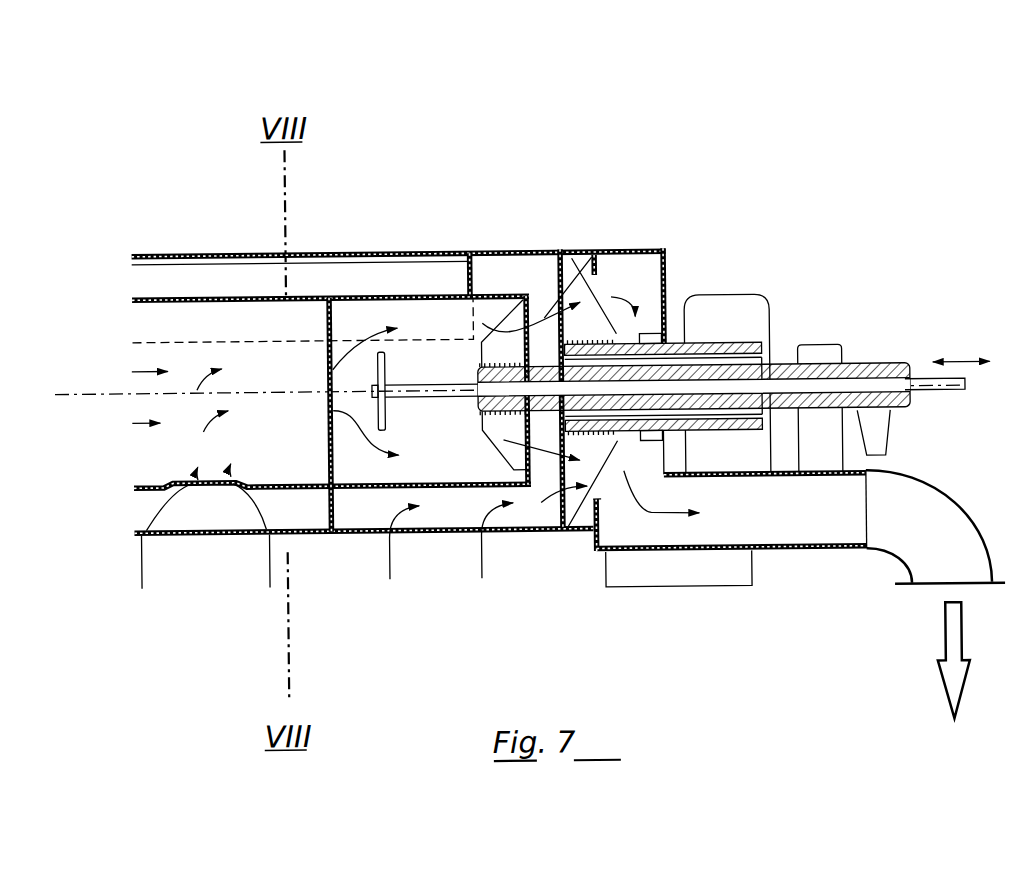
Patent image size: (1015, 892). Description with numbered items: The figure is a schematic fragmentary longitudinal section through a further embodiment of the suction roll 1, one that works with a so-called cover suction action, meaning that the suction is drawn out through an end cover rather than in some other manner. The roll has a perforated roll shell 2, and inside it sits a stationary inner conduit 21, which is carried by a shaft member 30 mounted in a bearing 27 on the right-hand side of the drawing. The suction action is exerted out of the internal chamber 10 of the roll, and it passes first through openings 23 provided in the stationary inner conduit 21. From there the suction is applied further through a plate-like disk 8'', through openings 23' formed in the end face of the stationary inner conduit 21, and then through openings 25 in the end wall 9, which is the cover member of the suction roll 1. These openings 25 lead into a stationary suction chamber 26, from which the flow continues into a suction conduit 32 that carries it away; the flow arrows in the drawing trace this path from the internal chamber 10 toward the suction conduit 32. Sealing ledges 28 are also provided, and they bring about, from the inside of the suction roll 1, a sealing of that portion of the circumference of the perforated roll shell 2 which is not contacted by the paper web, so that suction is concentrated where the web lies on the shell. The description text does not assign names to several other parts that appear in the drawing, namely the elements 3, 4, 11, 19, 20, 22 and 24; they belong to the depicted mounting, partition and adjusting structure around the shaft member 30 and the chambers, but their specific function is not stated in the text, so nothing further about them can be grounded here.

The suction roll 1 is at (625, 132).
The perforated roll shell 2 is at (496, 249).
The flange 3 is at (672, 343).
The mounting block 4 is at (718, 312).
The plate-like disk 8'' is at (302, 267).
The end wall 9 is at (565, 285).
The internal chamber 10 is at (138, 506).
The mixing chamber 11 is at (395, 526).
The baffle disc 19 is at (382, 351).
The adjusting rod 20 is at (922, 381).
The stationary inner conduit 21 is at (173, 291).
The partition wall 22 is at (337, 531).
The openings 23 is at (204, 568).
The openings 23' is at (532, 386).
The shaft bearing 24 is at (325, 404).
The openings 25 is at (608, 251).
The stationary suction chamber 26 is at (668, 252).
The bearing 27 is at (817, 347).
The sealing ledges 28 is at (462, 278).
The shaft member 30 is at (843, 362).
The suction conduit 32 is at (773, 514).